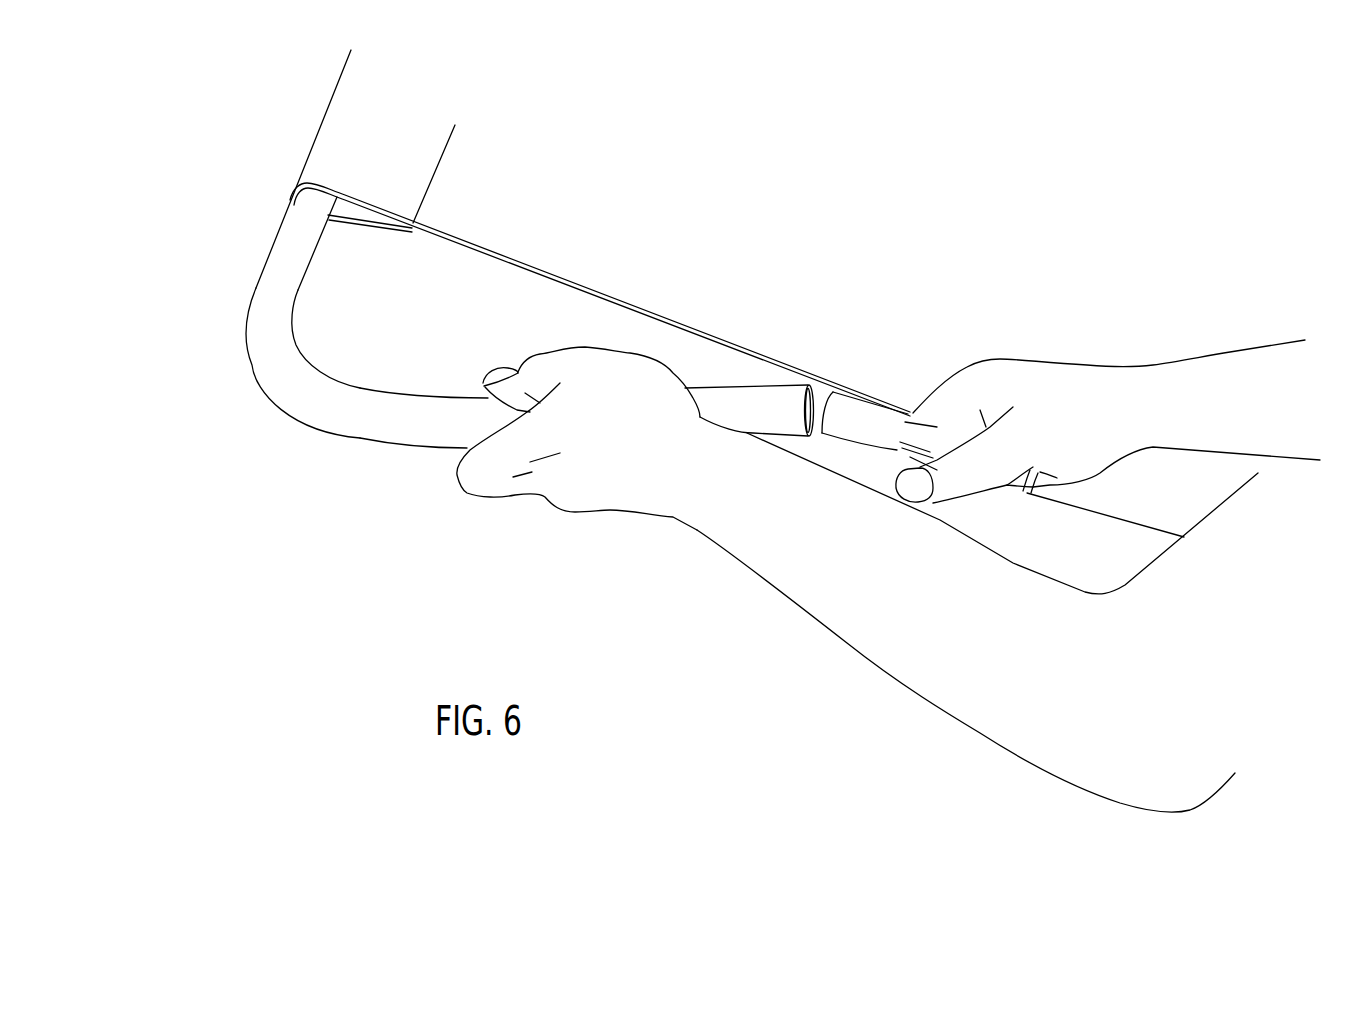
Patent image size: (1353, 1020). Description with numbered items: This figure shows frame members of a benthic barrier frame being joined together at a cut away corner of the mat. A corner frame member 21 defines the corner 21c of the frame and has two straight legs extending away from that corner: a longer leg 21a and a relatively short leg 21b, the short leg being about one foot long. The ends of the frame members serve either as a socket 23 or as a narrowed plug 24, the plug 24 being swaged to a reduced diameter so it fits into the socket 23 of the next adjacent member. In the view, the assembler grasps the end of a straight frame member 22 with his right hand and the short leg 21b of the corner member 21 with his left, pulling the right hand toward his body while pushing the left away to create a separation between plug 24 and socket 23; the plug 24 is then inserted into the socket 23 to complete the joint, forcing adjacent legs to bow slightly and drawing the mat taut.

The corner frame member 21 is at (286, 293).
The long straight leg 21a is at (283, 250).
The short straight leg 21b is at (418, 437).
The corner 21c is at (278, 373).
The straight frame member 22 is at (953, 437).
The frame socket end 23 is at (777, 398).
The frame plug end 24 is at (853, 407).